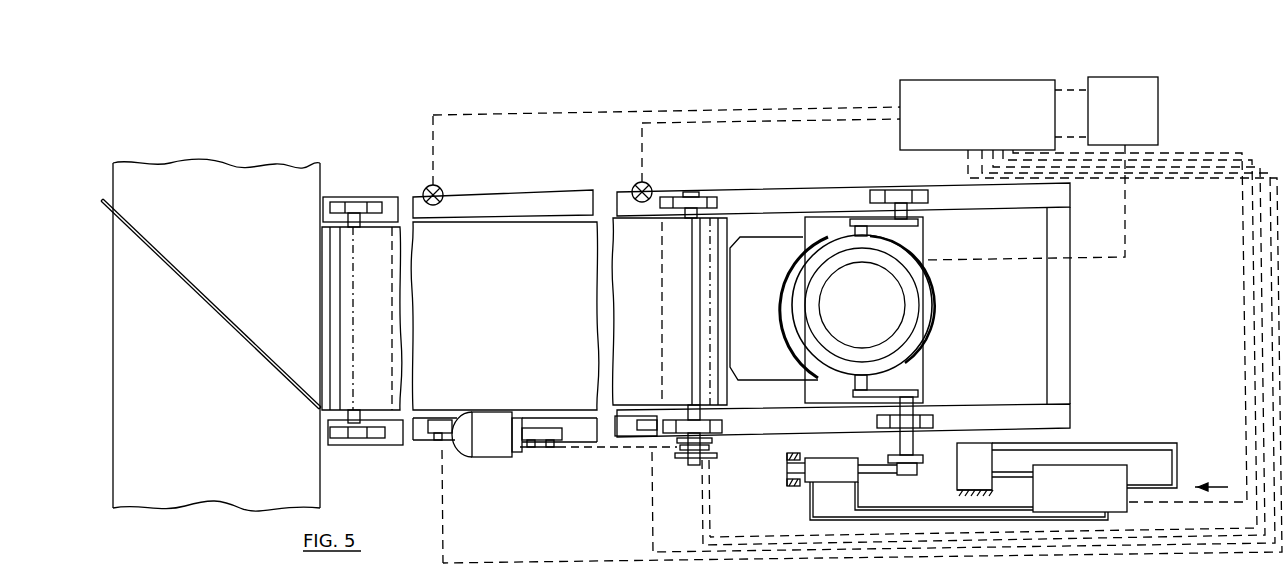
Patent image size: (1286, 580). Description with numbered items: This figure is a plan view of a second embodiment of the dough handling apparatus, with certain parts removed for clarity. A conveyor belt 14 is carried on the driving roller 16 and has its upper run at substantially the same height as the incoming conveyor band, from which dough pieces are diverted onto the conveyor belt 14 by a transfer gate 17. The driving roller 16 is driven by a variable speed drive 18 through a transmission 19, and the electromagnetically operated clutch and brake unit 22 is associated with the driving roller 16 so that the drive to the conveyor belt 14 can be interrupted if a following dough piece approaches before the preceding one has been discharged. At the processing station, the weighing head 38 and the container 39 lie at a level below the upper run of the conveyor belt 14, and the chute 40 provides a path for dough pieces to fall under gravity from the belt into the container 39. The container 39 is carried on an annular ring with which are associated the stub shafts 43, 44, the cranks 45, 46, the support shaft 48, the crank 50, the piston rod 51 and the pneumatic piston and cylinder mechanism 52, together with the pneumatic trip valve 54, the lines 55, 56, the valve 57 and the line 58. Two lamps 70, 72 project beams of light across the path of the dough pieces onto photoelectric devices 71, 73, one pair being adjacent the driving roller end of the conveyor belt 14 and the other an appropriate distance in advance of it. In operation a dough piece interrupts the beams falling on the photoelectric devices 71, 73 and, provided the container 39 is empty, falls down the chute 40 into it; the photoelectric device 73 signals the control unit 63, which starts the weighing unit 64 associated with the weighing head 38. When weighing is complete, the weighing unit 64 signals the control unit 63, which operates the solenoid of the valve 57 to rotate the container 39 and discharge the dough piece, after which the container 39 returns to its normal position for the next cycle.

The conveyor belt 14 is at (501, 322).
The driving roller 16 is at (660, 258).
The transfer gate 17 is at (252, 326).
The variable speed drive 18 is at (478, 458).
The transmission 19 is at (592, 452).
The electromagnetically operated clutch and brake unit 22 is at (717, 455).
The weighing head 38 is at (919, 366).
The container 39 is at (933, 306).
The chute 40 is at (782, 240).
The stub shaft 43 is at (870, 385).
The stub shaft 44 is at (866, 232).
The crank 45 is at (920, 395).
The crank 46 is at (908, 216).
The support shaft 48 is at (910, 208).
The crank 50 is at (916, 460).
The piston rod 51 is at (876, 473).
The pneumatic piston and cylinder mechanism 52 is at (838, 462).
The pneumatic trip valve 54 is at (972, 446).
The line 55 is at (810, 509).
The line 56 is at (858, 486).
The valve 57 is at (1128, 478).
The line 58 is at (1184, 484).
The control unit 63 is at (900, 131).
The weighing unit 64 is at (1158, 130).
The lamp 70 is at (440, 185).
The photoelectric device 71 is at (438, 440).
The lamp 72 is at (648, 182).
The photoelectric device 73 is at (640, 430).